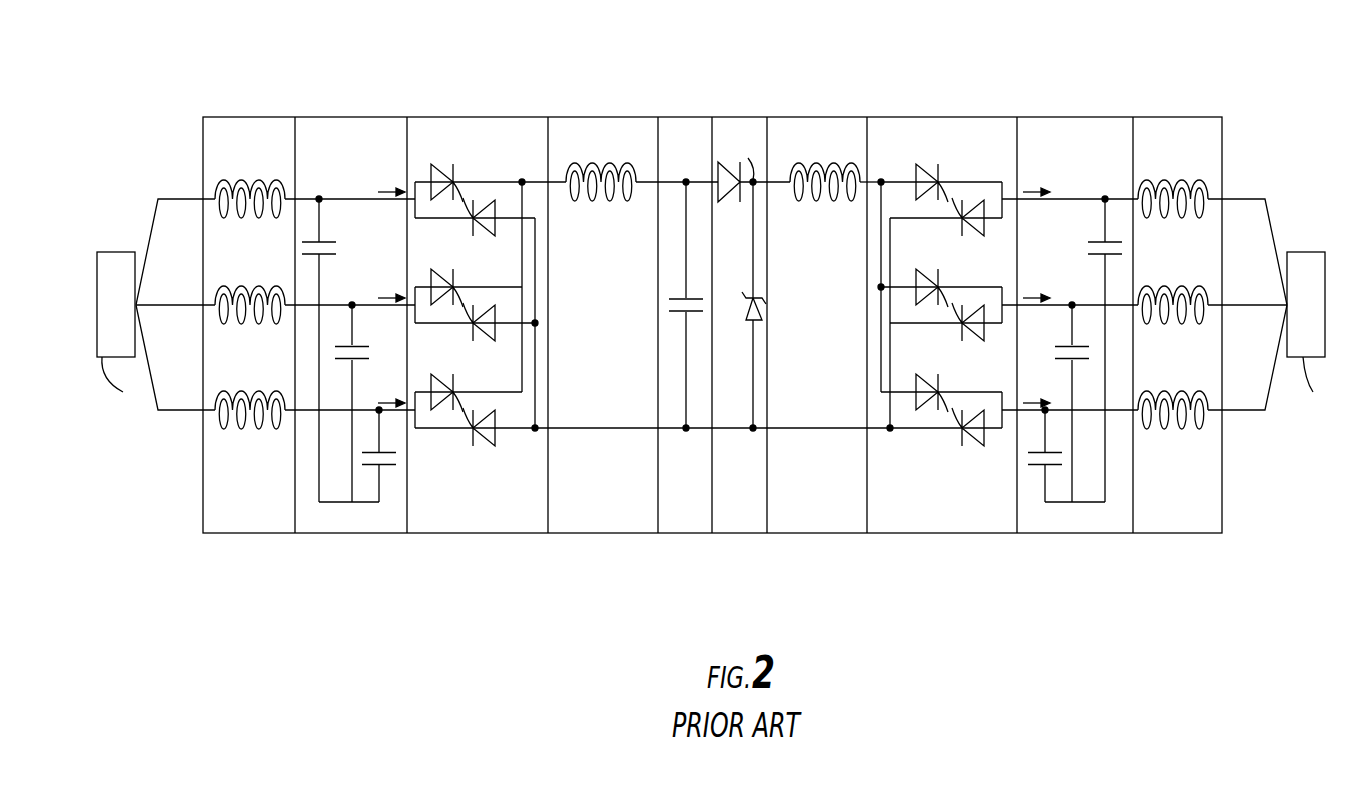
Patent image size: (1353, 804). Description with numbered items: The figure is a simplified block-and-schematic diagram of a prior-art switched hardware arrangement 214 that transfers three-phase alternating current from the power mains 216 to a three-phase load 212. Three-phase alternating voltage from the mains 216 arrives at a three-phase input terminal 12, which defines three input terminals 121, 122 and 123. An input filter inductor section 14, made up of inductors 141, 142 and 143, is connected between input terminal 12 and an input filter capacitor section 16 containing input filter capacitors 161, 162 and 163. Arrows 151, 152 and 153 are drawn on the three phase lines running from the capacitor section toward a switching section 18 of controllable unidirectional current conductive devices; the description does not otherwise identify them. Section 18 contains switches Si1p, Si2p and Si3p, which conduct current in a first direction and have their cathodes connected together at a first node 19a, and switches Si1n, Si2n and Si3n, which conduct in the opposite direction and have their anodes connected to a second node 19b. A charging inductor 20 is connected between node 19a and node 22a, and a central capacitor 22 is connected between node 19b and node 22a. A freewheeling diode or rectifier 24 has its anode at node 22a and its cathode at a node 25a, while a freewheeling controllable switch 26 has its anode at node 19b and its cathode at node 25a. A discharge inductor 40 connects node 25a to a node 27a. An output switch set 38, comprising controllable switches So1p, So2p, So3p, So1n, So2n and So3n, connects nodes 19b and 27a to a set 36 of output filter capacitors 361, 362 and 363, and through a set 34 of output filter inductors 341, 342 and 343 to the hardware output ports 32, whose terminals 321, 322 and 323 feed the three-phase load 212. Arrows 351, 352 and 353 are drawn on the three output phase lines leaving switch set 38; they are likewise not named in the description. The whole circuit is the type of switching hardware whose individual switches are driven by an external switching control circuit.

The three-phase input terminal 12 is at (152, 245).
The input terminal 121 is at (175, 233).
The input terminal 122 is at (175, 286).
The input terminal 123 is at (175, 357).
The input filter inductor section 14 is at (250, 275).
The inductor 141 is at (250, 222).
The inductor 142 is at (250, 327).
The inductor 143 is at (250, 429).
The input filter capacitor section 16 is at (350, 337).
The input filter capacitor 161 is at (330, 349).
The input filter capacitor 162 is at (340, 370).
The input filter capacitor 163 is at (385, 472).
The first phase input current 151 is at (384, 173).
The second phase input current 152 is at (384, 281).
The third phase input current 153 is at (386, 386).
The switching section 18 is at (481, 281).
The first node 19a is at (522, 271).
The second node 19b is at (530, 340).
The controllable switch Si1p is at (443, 165).
The controllable switch Si2p is at (443, 270).
The controllable switch Si3p is at (443, 375).
The controllable switch Si1n is at (488, 233).
The controllable switch Si2n is at (488, 338).
The controllable switch Si3n is at (488, 443).
The charging inductor 20 is at (617, 198).
The central capacitor 22 is at (681, 306).
The node 22a is at (683, 165).
The freewheeling diode or rectifier 24 is at (738, 198).
The node 25a is at (745, 157).
The freewheeling controllable switch 26 is at (743, 306).
The discharge inductor 40 is at (835, 198).
The node 27a is at (890, 167).
The output switch set 38 is at (940, 281).
The controllable switch So1p is at (927, 165).
The controllable switch So2p is at (927, 270).
The controllable switch So3p is at (927, 375).
The controllable switch So1n is at (977, 233).
The controllable switch So2n is at (977, 338).
The controllable switch So3n is at (977, 443).
The first phase output current 351 is at (1039, 173).
The second phase output current 352 is at (1039, 281).
The third phase output current 353 is at (1039, 386).
The set of output filter capacitors 36 is at (1069, 338).
The output filter capacitor 361 is at (1089, 349).
The output filter capacitor 362 is at (1078, 368).
The output filter capacitor 363 is at (1036, 472).
The set of output filter inductors 34 is at (1173, 275).
The output filter inductor 341 is at (1173, 222).
The output filter inductor 342 is at (1173, 327).
The output filter inductor 343 is at (1173, 429).
The hardware output ports 32 is at (1266, 245).
The terminal 321 is at (1247, 234).
The terminal 322 is at (1247, 286).
The terminal 323 is at (1247, 357).
The three-phase load 212 is at (1310, 394).
The switched hardware arrangement 214 is at (603, 620).
The power mains 216 is at (122, 394).